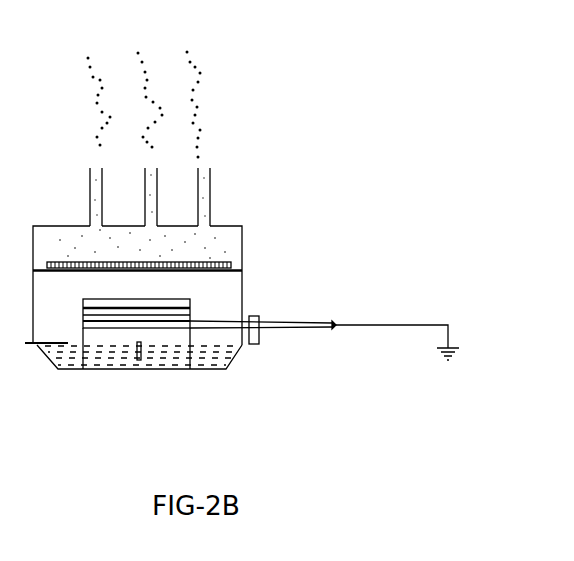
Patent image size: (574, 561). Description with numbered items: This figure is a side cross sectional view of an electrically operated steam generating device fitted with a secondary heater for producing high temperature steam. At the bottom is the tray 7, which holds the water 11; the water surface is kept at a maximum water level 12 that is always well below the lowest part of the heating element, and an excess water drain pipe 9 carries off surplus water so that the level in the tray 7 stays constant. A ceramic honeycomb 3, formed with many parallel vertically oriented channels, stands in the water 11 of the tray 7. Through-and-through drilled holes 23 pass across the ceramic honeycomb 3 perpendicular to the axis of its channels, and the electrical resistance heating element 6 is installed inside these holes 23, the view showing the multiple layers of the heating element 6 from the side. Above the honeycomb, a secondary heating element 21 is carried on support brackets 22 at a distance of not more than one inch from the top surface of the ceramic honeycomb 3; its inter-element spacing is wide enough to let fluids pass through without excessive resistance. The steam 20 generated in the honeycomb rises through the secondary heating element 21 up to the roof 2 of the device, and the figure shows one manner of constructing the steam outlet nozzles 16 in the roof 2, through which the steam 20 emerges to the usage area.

The roof 2 is at (221, 220).
The ceramic honeycomb 3 is at (194, 303).
The electrical resistance heating element 6 is at (118, 329).
The tray 7 is at (70, 371).
The excess water drain pipe 9 is at (139, 362).
The water 11 is at (215, 356).
The maximum water level 12 is at (42, 347).
The steam outlet nozzle 16 is at (213, 185).
The steam 20 is at (208, 94).
The secondary heating element 21 is at (224, 256).
The support bracket 22 is at (249, 280).
The drilled hole 23 is at (175, 329).